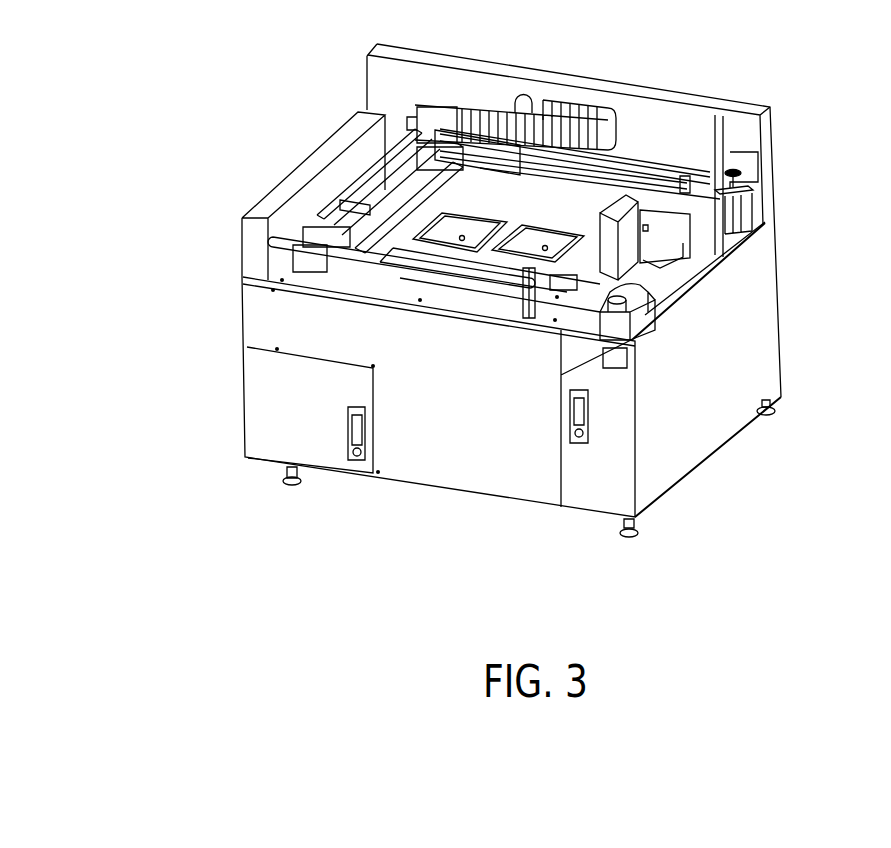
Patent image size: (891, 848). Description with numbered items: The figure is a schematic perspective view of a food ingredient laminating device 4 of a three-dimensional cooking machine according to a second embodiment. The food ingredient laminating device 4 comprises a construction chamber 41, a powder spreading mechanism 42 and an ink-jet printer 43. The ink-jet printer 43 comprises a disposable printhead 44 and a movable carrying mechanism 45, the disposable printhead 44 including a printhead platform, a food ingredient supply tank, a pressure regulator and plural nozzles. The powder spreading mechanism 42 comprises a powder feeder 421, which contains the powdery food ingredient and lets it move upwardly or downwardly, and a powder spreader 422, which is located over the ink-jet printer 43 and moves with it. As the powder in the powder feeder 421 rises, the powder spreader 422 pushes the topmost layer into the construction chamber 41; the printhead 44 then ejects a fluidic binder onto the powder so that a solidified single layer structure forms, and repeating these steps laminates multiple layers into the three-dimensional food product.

The food ingredient laminating device 4 is at (768, 83).
The construction chamber 41 is at (523, 248).
The powder spreading mechanism 42 is at (508, 557).
The powder feeder 421 is at (445, 236).
The powder spreader 422 is at (392, 244).
The ink-jet printer 43 is at (113, 158).
The disposable printhead 44 is at (298, 253).
The movable carrying mechanism 45 is at (425, 152).